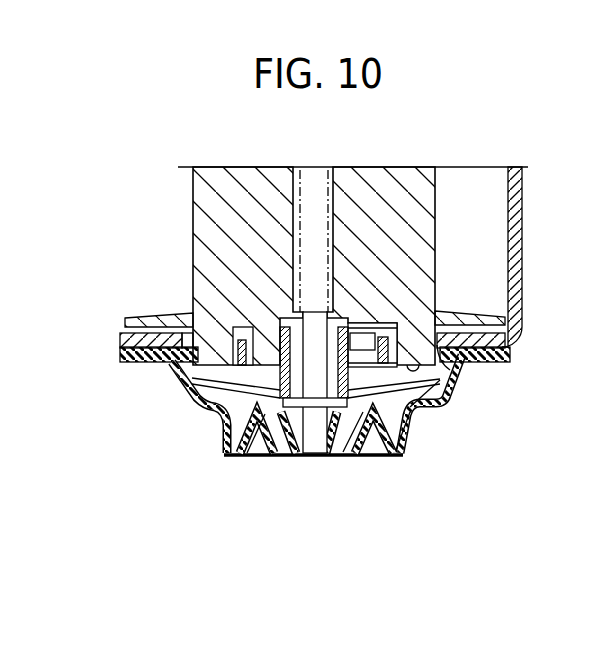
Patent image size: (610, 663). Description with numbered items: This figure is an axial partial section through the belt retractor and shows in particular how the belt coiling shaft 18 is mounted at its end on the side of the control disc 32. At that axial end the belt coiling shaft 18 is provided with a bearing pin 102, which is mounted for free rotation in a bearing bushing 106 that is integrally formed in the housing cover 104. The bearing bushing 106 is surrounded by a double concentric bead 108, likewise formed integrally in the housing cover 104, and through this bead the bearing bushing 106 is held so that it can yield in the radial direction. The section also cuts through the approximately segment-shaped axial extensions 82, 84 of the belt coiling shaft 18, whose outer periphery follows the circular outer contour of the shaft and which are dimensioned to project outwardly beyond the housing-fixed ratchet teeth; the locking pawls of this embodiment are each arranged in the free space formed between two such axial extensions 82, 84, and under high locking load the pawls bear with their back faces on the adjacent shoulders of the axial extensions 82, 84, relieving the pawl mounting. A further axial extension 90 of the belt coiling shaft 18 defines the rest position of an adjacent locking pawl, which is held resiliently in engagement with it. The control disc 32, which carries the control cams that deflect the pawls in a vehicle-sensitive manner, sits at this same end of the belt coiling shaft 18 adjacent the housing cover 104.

The belt coiling shaft 18 is at (203, 192).
The control disc 32 is at (428, 390).
The axial extension 82 is at (455, 400).
The axial extension 84 is at (177, 378).
The further axial extension 90 is at (270, 345).
The bearing pin 102 is at (318, 437).
The housing cover 104 is at (497, 362).
The bearing bushing 106 is at (285, 457).
The double concentric bead 108 is at (398, 452).